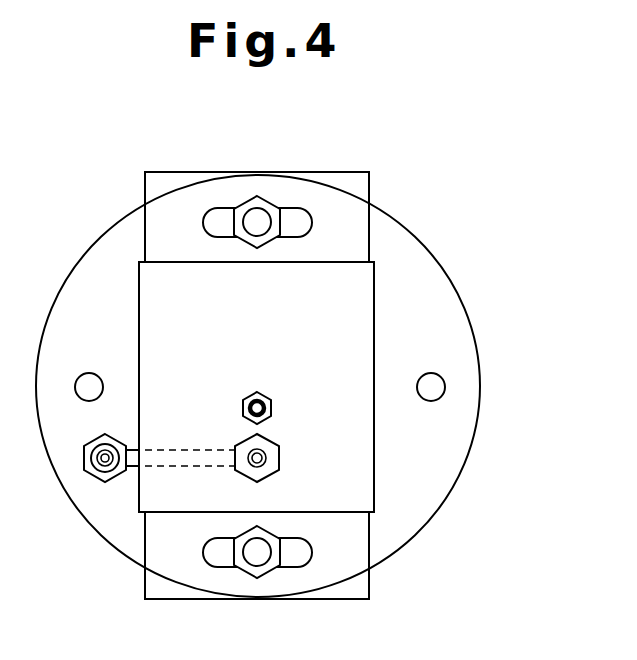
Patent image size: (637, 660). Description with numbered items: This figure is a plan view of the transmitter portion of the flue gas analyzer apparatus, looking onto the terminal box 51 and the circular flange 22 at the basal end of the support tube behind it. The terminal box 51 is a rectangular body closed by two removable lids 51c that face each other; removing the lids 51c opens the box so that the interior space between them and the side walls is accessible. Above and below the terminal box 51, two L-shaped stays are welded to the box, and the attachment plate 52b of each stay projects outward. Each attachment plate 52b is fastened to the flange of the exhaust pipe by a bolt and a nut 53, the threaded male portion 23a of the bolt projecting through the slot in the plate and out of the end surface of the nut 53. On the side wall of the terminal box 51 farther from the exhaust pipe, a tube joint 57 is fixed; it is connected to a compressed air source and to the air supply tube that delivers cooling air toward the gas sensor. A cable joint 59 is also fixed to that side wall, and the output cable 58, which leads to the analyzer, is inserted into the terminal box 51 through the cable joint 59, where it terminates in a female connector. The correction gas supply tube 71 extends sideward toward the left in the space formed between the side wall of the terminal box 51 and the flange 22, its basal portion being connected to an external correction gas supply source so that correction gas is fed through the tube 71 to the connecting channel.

The flange 22 is at (408, 237).
The threaded male portion 23a is at (255, 218).
The terminal box 51 is at (374, 316).
The removable lids 51c is at (139, 345).
The attachment plate 52b is at (341, 190).
The nut 53 is at (264, 203).
The tube joint 57 is at (264, 398).
The output cable 58 is at (266, 457).
The cable joint 59 is at (265, 445).
The correction gas supply tube 71 is at (134, 462).